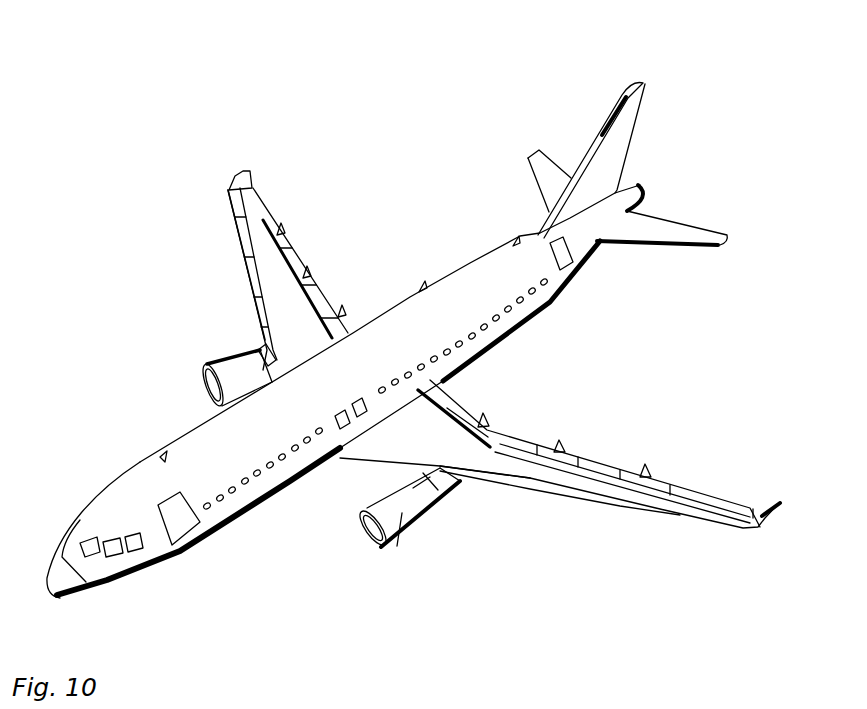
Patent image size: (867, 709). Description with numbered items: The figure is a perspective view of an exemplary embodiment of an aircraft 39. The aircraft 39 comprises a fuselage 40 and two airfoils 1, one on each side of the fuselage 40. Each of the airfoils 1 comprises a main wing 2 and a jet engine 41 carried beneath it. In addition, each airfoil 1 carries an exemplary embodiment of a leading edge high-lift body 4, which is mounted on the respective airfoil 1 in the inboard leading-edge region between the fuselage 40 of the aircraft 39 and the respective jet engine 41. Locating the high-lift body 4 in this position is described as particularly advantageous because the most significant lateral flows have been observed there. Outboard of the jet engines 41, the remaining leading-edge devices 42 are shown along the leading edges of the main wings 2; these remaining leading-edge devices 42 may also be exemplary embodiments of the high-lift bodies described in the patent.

The airfoil 1 is at (324, 250).
The main wing 2 is at (264, 214).
The high-lift body 4 is at (203, 383).
The aircraft 39 is at (442, 156).
The fuselage 40 is at (195, 478).
The jet engine 41 is at (255, 346).
The leading-edge devices 42 is at (235, 207).